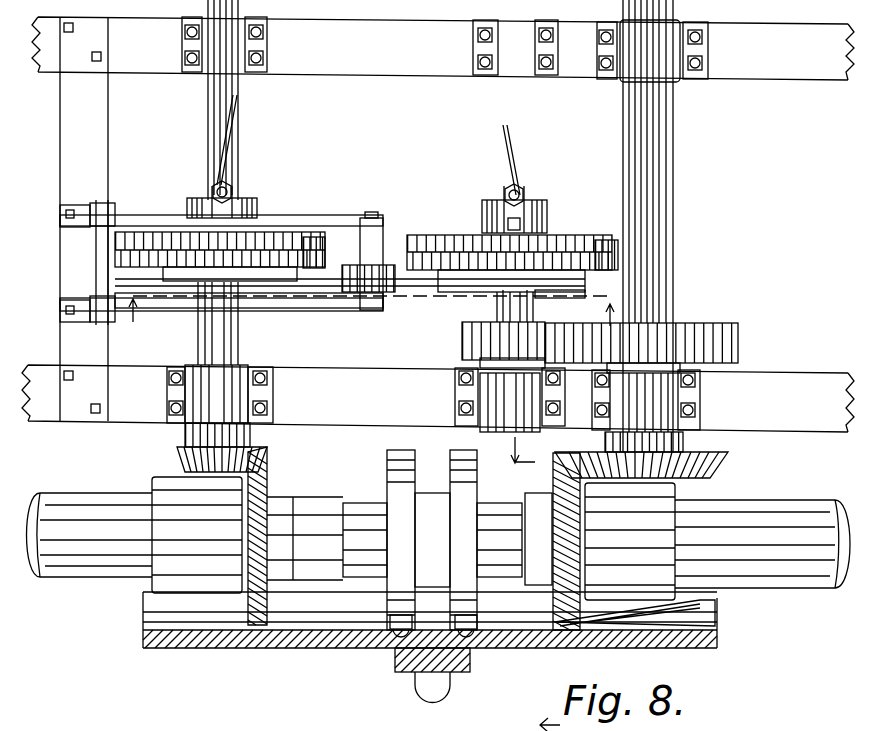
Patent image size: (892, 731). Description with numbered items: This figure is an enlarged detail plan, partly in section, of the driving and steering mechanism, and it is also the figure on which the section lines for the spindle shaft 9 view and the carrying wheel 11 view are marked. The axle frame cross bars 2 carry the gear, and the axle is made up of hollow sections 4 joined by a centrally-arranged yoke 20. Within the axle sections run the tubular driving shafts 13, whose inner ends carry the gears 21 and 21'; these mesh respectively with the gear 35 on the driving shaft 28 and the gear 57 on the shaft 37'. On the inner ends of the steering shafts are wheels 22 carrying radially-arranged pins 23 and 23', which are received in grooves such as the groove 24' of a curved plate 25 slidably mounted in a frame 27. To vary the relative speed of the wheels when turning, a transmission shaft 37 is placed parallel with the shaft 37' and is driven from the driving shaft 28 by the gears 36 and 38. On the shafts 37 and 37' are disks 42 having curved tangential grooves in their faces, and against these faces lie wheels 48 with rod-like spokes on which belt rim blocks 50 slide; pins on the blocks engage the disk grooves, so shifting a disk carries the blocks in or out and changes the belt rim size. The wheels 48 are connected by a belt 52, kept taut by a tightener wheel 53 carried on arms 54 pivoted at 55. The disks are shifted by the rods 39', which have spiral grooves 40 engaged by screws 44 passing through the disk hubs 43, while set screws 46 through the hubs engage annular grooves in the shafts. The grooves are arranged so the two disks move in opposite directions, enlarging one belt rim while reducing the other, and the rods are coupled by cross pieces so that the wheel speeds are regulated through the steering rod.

The cross bar 2 is at (800, 80).
The hollow section 4 is at (90, 493).
The spindle shaft 9 is at (365, 304).
The carrying wheel 11 is at (528, 584).
The tubular driving shaft 13 is at (316, 503).
The yoke 20 is at (432, 540).
The gear 21 is at (560, 565).
The gear 21' is at (247, 562).
The wheel 22 is at (389, 458).
The pin 23 is at (483, 646).
The pin 23' is at (381, 646).
The groove 24' is at (654, 621).
The plate 25 is at (292, 649).
The frame 27 is at (444, 684).
The driving shaft 28 is at (666, 256).
The gear 35 is at (730, 459).
The gear 36 is at (740, 345).
The transmission shaft 37 is at (499, 361).
The shaft 37' is at (234, 364).
The gear 38 is at (462, 340).
The rod 39' is at (238, 100).
The spiral groove 40 is at (222, 144).
The disk 42 is at (288, 242).
The hub 43 is at (247, 206).
The screw 44 is at (233, 193).
The set screw 46 is at (521, 226).
The wheel 48 is at (325, 258).
The belt rim block 50 is at (548, 294).
The belt 52 is at (424, 293).
The wheel 53 is at (388, 266).
The arm 54 is at (338, 309).
The pivot 55 is at (100, 248).
The gear 57 is at (177, 453).